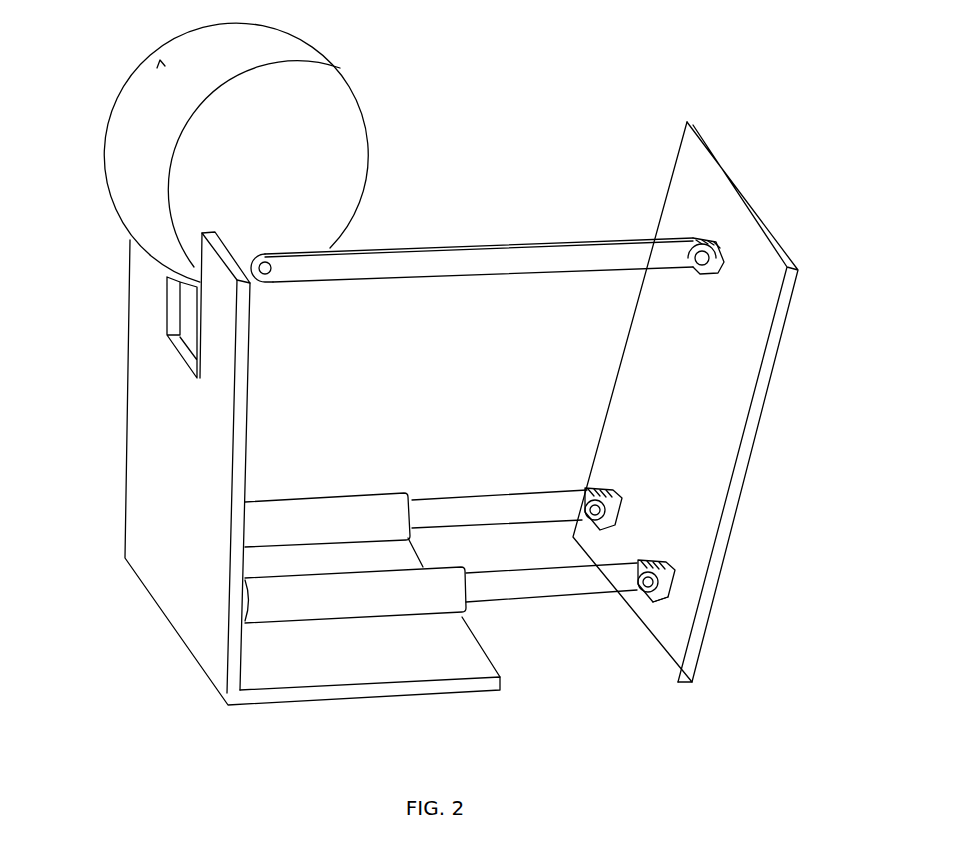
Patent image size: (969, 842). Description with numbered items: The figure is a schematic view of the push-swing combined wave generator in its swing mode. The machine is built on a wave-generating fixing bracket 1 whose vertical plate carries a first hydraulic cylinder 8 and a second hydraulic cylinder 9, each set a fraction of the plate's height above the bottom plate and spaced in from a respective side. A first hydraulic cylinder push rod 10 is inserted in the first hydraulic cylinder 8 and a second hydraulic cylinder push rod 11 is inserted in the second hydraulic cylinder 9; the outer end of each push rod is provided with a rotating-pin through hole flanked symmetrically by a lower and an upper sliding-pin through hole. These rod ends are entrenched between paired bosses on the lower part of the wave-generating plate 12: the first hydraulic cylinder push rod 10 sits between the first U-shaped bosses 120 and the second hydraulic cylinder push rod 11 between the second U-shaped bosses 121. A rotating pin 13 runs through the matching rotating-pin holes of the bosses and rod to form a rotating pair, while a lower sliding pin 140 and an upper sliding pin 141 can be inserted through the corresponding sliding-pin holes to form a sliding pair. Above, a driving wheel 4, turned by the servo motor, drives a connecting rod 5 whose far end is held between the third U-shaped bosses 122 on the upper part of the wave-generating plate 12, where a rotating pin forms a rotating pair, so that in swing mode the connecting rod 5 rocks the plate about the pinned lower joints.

The wave-generating fixing bracket 1 is at (150, 424).
The driving wheel 4 is at (187, 122).
The connecting rod 5 is at (512, 258).
The first hydraulic cylinder 8 is at (295, 607).
The second hydraulic cylinder 9 is at (302, 532).
The first hydraulic cylinder push rod 10 is at (572, 588).
The second hydraulic cylinder push rod 11 is at (507, 513).
The wave-generating plate 12 is at (710, 190).
The third U-shaped boss 122 is at (713, 260).
The rotating pin 13 is at (608, 500).
The second U-shaped boss 121 is at (610, 517).
The first U-shaped boss 120 is at (660, 582).
The upper sliding pin 141 is at (660, 580).
The lower sliding pin 140 is at (653, 600).